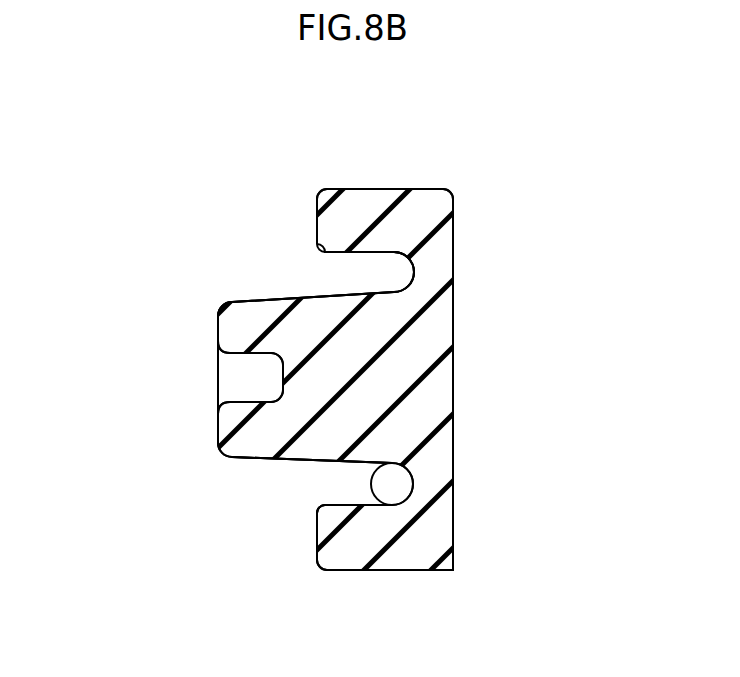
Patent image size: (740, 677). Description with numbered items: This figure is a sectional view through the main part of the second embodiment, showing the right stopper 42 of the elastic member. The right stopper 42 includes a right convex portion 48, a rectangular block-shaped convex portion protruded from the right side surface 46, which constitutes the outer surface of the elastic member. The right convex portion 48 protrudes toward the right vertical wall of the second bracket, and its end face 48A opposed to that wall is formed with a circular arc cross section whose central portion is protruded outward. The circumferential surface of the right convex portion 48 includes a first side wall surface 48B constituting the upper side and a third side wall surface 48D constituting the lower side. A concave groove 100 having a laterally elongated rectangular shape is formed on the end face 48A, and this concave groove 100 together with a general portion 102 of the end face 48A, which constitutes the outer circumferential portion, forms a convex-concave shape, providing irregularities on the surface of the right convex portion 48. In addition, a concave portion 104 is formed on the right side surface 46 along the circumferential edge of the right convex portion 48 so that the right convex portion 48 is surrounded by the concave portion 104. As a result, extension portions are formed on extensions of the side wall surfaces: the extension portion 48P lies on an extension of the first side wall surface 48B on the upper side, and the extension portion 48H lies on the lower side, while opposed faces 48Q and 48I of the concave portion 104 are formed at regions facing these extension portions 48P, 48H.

The right stopper 42 is at (201, 115).
The right side surface 46 is at (317, 213).
The right convex portion 48 is at (254, 297).
The end face 48A is at (209, 329).
The first side wall surface 48B is at (285, 298).
The third side wall surface 48D is at (270, 460).
The extension portion 48P is at (390, 294).
The extension portion 48H is at (400, 488).
The opposed face 48Q is at (361, 253).
The opposed face 48I is at (367, 505).
The concave groove 100 is at (222, 384).
The general portion 102 is at (218, 313).
The concave portion 104 is at (323, 489).